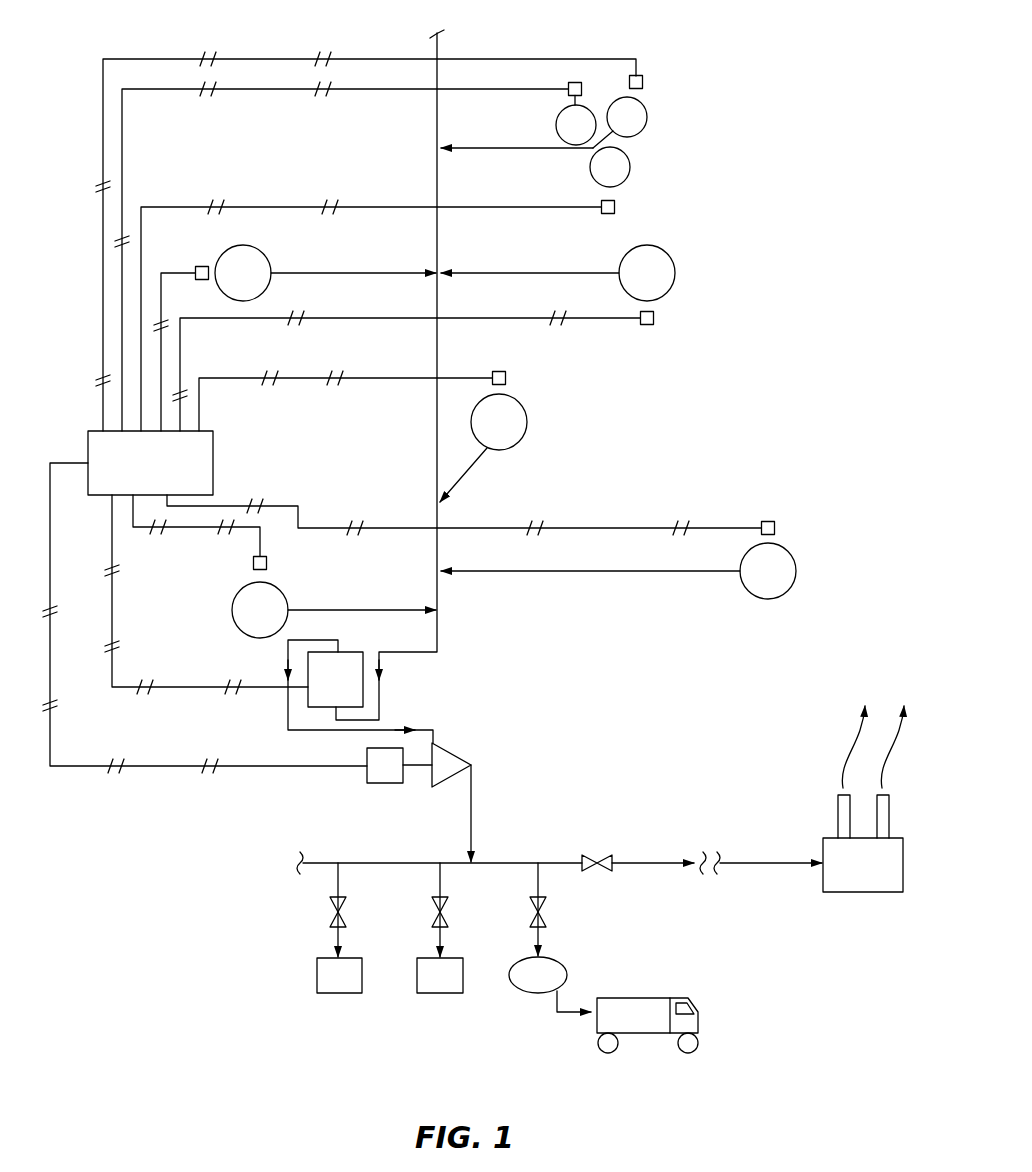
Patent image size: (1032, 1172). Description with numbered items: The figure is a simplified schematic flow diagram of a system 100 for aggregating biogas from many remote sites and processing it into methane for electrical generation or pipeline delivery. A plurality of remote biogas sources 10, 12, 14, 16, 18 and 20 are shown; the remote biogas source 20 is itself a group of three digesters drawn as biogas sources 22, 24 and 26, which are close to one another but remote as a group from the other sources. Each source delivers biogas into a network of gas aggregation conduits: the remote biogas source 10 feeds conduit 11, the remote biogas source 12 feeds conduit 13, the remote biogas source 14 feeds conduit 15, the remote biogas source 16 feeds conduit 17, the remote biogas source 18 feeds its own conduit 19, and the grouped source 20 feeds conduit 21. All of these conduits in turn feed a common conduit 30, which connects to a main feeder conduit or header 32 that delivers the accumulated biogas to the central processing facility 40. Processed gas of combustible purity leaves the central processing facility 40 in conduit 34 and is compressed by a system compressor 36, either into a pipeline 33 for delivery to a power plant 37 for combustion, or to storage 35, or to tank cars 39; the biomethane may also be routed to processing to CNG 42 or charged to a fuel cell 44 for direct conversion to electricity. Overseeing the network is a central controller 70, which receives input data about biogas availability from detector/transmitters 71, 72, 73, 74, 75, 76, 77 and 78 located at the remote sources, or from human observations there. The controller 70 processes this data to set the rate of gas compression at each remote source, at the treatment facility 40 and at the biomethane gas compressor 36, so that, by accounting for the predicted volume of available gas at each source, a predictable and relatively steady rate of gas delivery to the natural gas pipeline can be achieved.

The system 100 is at (788, 40).
The remote biogas source 10 is at (675, 273).
The conduit 11 is at (530, 273).
The remote biogas source 12 is at (262, 252).
The conduit 13 is at (355, 273).
The remote biogas source 14 is at (526, 418).
The conduit 15 is at (470, 468).
The remote biogas source 16 is at (796, 571).
The conduit 17 is at (618, 573).
The remote biogas source 18 is at (240, 630).
The fifth gas supply line 19 is at (356, 610).
The remote biogas source 20 is at (604, 148).
The conduit 21 is at (470, 152).
The biogas source 22 is at (556, 125).
The biogas source 24 is at (596, 181).
The biogas source 26 is at (646, 118).
The conduit 30 is at (435, 443).
The main feeder conduit 32 is at (420, 654).
The pipeline 33 is at (500, 863).
The conduit 34 is at (288, 730).
The storage 35 is at (565, 965).
The system compressor 36 is at (458, 748).
The power plant 37 is at (863, 799).
The tank cars 39 is at (655, 990).
The central processing facility 40 is at (335, 679).
The processing to CNG 42 is at (339, 928).
The fuel cell 44 is at (440, 928).
The controller 70 is at (150, 463).
The detector/transmitter 71 is at (640, 76).
The detector/transmitter 72 is at (575, 82).
The detector/transmitter 73 is at (615, 208).
The detector/transmitter 74 is at (655, 320).
The detector/transmitter 75 is at (202, 266).
The detector/transmitter 76 is at (507, 378).
The seventh control valve 77 is at (770, 520).
The detector/transmitter 78 is at (253, 563).